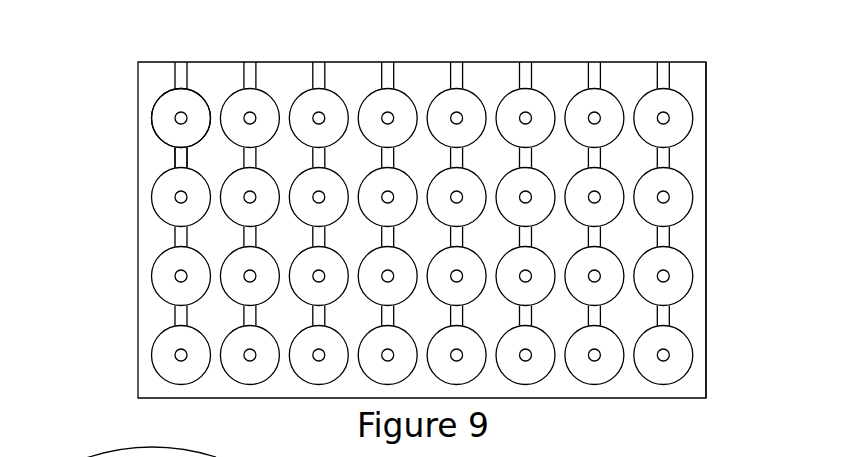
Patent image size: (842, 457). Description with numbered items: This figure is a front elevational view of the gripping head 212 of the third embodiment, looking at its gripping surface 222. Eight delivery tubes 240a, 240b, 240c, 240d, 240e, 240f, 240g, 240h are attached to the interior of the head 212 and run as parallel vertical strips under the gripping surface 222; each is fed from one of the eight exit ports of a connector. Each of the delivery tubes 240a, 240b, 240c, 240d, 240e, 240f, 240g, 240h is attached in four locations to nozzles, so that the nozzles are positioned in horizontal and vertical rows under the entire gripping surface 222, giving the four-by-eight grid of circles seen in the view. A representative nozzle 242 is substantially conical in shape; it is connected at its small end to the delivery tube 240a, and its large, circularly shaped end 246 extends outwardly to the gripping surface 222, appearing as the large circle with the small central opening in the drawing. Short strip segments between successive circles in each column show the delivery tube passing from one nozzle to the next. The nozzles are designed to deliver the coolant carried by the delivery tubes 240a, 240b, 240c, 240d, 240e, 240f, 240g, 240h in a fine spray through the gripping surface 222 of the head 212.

The head 212 is at (138, 275).
The gripping surface 222 is at (692, 233).
The delivery tube 240a is at (181, 70).
The delivery tube 240b is at (250, 70).
The delivery tube 240c is at (319, 70).
The delivery tube 240d is at (388, 70).
The delivery tube 240e is at (457, 70).
The delivery tube 240f is at (526, 70).
The delivery tube 240g is at (594, 70).
The delivery tube 240h is at (663, 70).
The nozzle 242 is at (162, 122).
The large circularly shaped end 246 is at (160, 138).